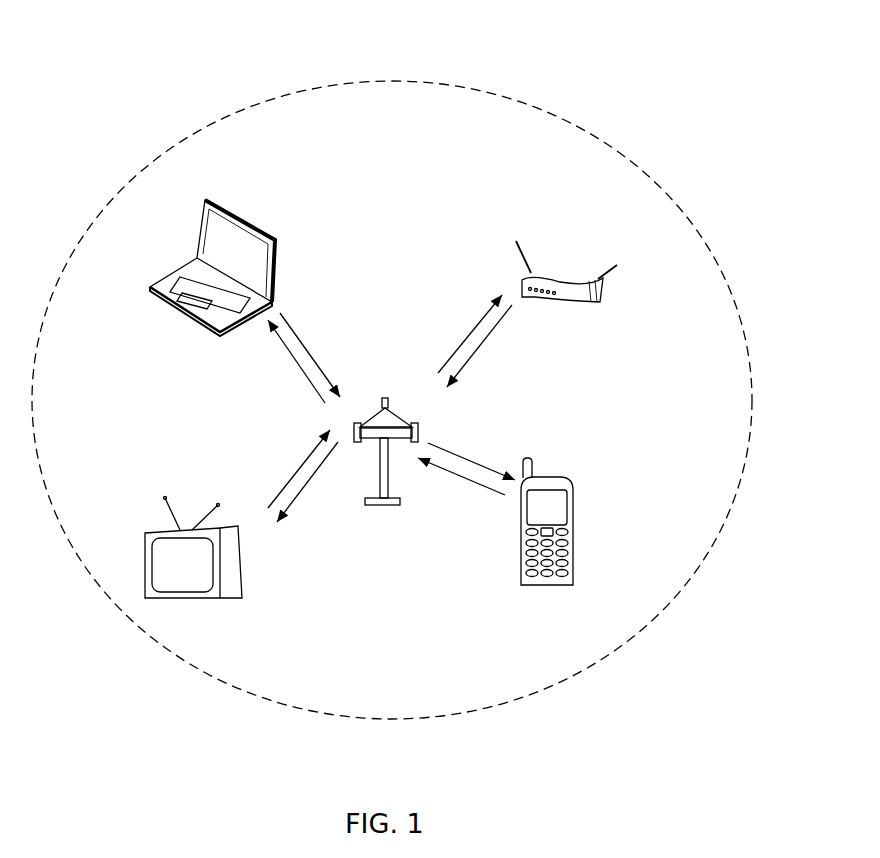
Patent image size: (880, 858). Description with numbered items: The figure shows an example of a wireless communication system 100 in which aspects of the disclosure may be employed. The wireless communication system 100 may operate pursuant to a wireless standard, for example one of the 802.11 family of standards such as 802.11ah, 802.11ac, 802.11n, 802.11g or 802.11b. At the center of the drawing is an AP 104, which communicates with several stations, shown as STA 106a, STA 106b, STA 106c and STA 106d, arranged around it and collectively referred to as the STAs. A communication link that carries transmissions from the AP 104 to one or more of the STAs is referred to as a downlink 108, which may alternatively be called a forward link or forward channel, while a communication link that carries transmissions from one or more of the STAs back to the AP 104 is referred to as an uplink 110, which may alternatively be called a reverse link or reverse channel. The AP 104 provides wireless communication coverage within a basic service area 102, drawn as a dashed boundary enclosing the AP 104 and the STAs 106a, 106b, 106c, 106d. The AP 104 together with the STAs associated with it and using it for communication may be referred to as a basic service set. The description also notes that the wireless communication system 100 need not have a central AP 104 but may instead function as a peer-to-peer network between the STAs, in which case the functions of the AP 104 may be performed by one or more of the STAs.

The wireless communication system 100 is at (632, 58).
The basic service area 102 is at (700, 231).
The AP 104 is at (382, 396).
The STA 106a is at (552, 477).
The STA 106b is at (235, 527).
The STA 106c is at (208, 200).
The STA 106d is at (580, 278).
The downlink 108 is at (458, 448).
The uplink 110 is at (422, 477).